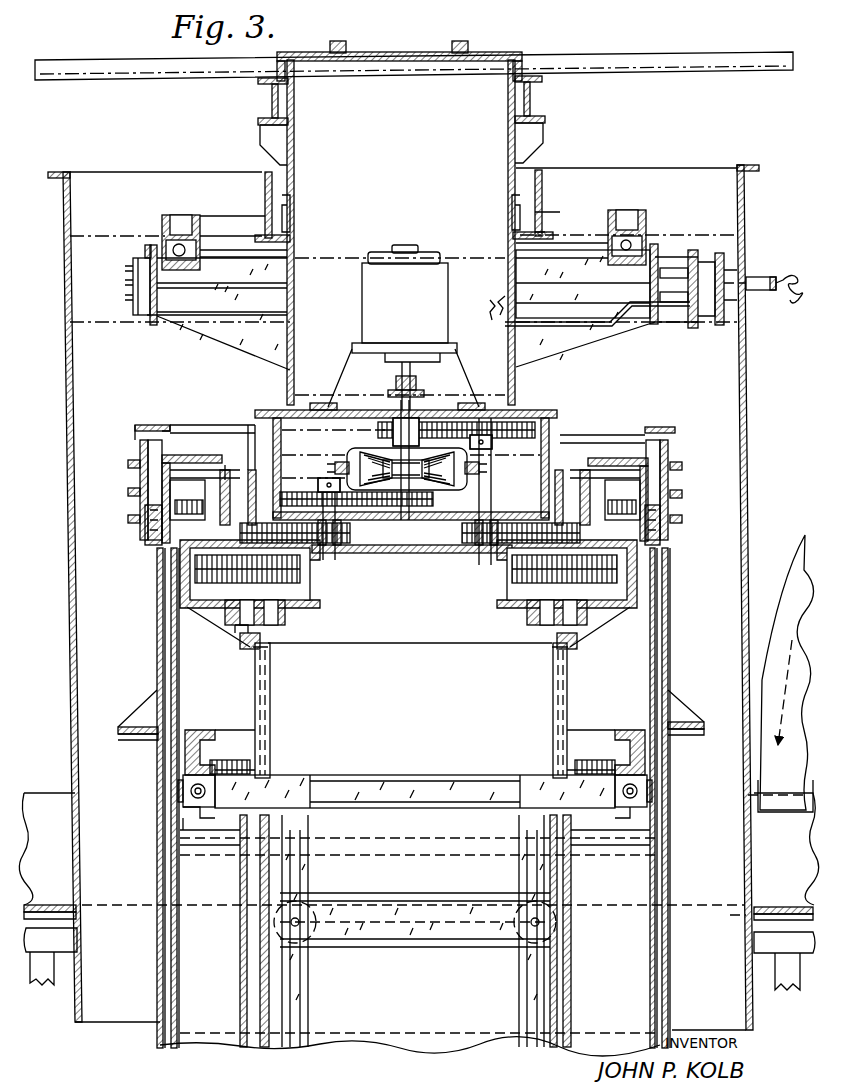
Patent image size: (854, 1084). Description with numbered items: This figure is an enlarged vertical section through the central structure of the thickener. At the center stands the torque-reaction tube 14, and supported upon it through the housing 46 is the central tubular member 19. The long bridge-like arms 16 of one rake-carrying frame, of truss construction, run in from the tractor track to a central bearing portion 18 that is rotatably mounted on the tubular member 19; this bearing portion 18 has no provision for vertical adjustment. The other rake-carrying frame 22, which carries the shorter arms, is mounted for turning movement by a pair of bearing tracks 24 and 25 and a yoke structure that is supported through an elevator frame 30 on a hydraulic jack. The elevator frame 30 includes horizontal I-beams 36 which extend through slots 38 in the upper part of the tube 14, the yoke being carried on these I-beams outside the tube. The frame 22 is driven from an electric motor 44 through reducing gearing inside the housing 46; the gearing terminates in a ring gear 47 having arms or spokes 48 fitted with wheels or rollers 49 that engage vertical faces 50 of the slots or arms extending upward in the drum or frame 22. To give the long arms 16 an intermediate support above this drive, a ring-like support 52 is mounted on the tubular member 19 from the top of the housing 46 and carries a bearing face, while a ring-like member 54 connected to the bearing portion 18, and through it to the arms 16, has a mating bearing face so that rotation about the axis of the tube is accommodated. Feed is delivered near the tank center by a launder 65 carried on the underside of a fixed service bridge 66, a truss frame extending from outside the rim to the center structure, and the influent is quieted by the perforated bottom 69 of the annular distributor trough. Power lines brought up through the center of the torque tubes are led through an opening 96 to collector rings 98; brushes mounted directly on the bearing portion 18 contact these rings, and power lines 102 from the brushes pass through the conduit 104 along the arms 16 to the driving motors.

The central torque-reaction tube 14 is at (395, 652).
The long bridge-like arms 16 is at (42, 985).
The central bearing portion 18 is at (174, 172).
The central tubular member 19 is at (530, 142).
The rake-carrying frame 22 is at (157, 1026).
The bearing track 24 is at (195, 828).
The bearing track 25 is at (200, 740).
The elevator frame 30 is at (418, 775).
The horizontal I-beams 36 is at (362, 775).
The slots 38 is at (272, 703).
The electric motor 44 is at (448, 263).
The housing 46 is at (552, 432).
The ring gear 47 is at (185, 582).
The arms or spokes 48 is at (145, 472).
The wheels or rollers 49 is at (148, 516).
The vertical faces 50 is at (670, 557).
The ring-like support 52 is at (645, 245).
The ring-like member 54 is at (620, 212).
The launder 65 is at (795, 540).
The service bridge 66 is at (698, 74).
The perforated bottom 69 is at (44, 905).
The opening 96 is at (500, 322).
The collector rings 98 is at (125, 293).
The power lines 102 is at (710, 322).
The conduit 104 is at (776, 278).